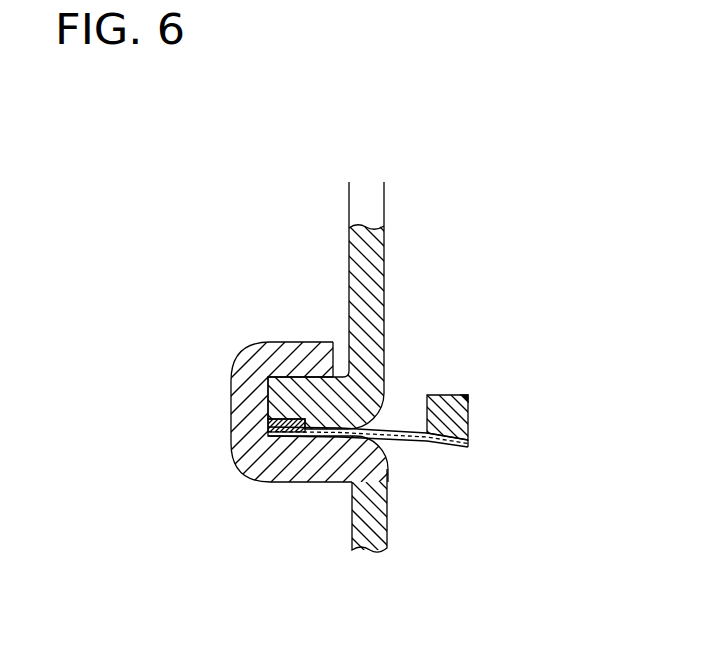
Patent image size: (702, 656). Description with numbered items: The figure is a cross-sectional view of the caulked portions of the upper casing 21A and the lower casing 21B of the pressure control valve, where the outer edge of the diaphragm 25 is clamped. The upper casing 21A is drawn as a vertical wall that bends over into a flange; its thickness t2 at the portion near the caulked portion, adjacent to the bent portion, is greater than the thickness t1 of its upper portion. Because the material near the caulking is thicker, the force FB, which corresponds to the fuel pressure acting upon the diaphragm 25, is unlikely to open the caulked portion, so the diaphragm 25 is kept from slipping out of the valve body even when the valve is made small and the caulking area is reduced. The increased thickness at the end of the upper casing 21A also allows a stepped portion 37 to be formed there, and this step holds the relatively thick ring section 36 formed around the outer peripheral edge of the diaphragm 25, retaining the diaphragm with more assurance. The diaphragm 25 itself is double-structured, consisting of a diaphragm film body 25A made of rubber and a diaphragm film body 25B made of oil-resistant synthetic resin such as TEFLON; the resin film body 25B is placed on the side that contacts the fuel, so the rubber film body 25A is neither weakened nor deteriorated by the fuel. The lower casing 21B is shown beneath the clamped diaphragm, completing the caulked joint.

The upper casing 21A is at (385, 262).
The lower casing 21B is at (360, 526).
The stepped portion 37 is at (387, 350).
The ring section 36 is at (270, 437).
The diaphragm 25 is at (417, 464).
The diaphragm film body 25A is at (404, 420).
The diaphragm film body 25B is at (404, 420).
The thickness of the upper portion of the upper casing t1 is at (312, 194).
The thickness of the upper casing near the caulked portion t2 is at (268, 428).
The force FB is at (339, 376).